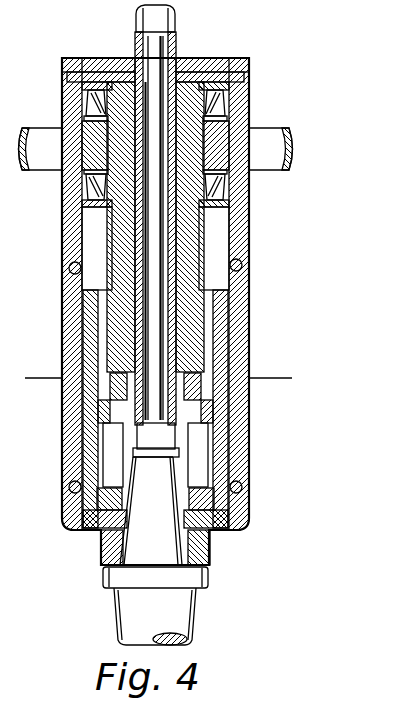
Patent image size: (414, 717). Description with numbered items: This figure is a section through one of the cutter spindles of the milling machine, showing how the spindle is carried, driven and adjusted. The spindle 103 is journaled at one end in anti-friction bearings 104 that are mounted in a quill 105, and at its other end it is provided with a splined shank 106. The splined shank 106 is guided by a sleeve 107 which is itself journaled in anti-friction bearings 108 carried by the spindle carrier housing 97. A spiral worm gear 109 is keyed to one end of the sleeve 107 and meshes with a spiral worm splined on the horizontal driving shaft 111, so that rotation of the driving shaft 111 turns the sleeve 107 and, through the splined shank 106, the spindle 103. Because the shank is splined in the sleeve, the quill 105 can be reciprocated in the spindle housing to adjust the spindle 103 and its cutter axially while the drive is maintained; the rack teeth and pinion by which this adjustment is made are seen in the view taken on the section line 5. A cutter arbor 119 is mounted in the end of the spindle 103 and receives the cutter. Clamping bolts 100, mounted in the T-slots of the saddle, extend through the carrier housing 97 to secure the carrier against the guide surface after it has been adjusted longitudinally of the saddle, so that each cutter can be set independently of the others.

The section line 5- 5 is at (290, 388).
The spindle carrier housing 97 is at (242, 246).
The clamping bolts 100 is at (241, 265).
The spindle 103 is at (243, 323).
The anti-friction bearings 104 is at (232, 477).
The quill 105 is at (222, 462).
The splined shank 106 is at (190, 56).
The sleeve 107 is at (246, 108).
The anti-friction bearings 108 is at (240, 190).
The spiral worm gear 109 is at (248, 122).
The horizontal driving shaft 111 is at (292, 158).
The cutter arbor 119 is at (188, 603).